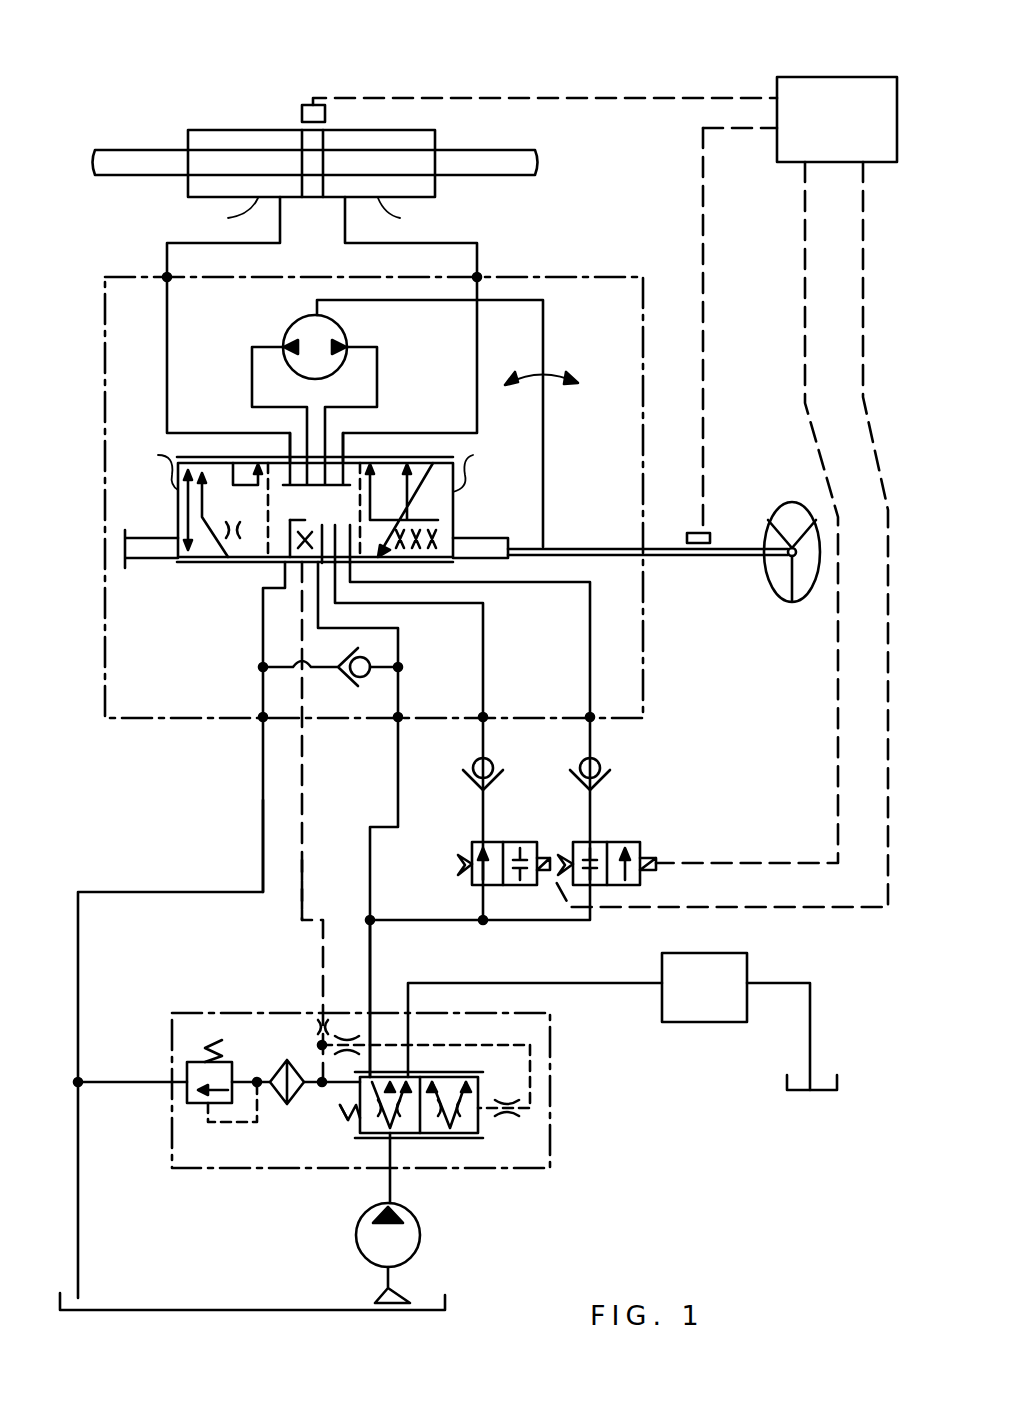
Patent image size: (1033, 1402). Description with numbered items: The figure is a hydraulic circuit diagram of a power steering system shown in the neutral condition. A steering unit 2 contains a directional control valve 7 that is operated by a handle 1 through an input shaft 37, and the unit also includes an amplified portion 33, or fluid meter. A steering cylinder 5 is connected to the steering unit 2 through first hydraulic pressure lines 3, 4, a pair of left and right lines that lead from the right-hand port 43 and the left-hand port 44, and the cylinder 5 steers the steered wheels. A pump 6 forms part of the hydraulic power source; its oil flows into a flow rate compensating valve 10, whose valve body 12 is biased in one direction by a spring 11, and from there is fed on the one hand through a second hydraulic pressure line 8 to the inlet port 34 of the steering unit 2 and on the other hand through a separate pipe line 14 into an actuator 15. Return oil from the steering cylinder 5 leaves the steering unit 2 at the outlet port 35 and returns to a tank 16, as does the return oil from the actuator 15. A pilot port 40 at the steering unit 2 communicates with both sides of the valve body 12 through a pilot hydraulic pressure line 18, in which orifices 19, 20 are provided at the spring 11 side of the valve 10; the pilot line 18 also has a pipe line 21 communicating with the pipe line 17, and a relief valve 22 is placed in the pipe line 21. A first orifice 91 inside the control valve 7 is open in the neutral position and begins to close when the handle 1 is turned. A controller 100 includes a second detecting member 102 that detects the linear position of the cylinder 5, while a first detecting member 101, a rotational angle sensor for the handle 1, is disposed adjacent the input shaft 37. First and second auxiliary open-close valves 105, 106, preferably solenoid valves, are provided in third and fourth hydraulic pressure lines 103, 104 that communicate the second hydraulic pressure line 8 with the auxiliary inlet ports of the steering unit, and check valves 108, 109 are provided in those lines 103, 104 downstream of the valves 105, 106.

The handle 1 is at (778, 595).
The steering unit 2 is at (105, 355).
The first hydraulic pressure line 3 is at (167, 272).
The first hydraulic pressure line 4 is at (477, 272).
The steering cylinder 5 is at (445, 140).
The pump 6 is at (356, 1240).
The directional control valve 7 is at (178, 515).
The second hydraulic pressure line 8 is at (370, 955).
The flow rate compensating valve 10 is at (550, 1112).
The spring 11 is at (340, 1112).
The valve body 12 is at (478, 1130).
The pipe line 14 is at (560, 983).
The actuator 15 is at (705, 1022).
The tank 16 is at (810, 1095).
The pipe line 17 is at (263, 860).
The pilot hydraulic pressure line 18 is at (310, 885).
The orifice 19 is at (358, 1035).
The orifice 20 is at (312, 1027).
The pipe line 21 is at (145, 1082).
The relief valve 22 is at (208, 1108).
The amplified portion 33 is at (297, 320).
The inlet port 34 is at (325, 580).
The outlet port 35 is at (285, 565).
The input shaft 37 is at (655, 560).
The pilot port 40 is at (295, 590).
The right-hand port 43 is at (360, 455).
The left-hand port 44 is at (275, 455).
The first orifice 91 is at (305, 535).
The controller 100 is at (835, 90).
The first detecting member 101 is at (712, 528).
The second detecting member 102 is at (302, 115).
The third hydraulic pressure line 103 is at (483, 693).
The fourth hydraulic pressure line 104 is at (590, 690).
The first auxiliary open-close valve 105 is at (470, 840).
The second auxiliary open-close valve 106 is at (620, 840).
The check valve 108 is at (470, 768).
The check valve 109 is at (603, 768).